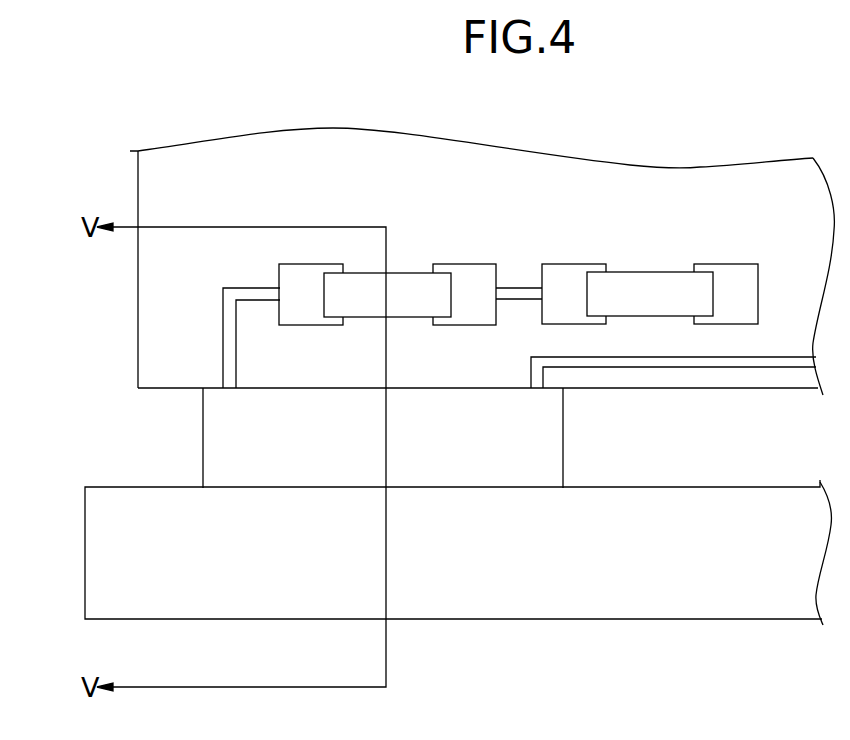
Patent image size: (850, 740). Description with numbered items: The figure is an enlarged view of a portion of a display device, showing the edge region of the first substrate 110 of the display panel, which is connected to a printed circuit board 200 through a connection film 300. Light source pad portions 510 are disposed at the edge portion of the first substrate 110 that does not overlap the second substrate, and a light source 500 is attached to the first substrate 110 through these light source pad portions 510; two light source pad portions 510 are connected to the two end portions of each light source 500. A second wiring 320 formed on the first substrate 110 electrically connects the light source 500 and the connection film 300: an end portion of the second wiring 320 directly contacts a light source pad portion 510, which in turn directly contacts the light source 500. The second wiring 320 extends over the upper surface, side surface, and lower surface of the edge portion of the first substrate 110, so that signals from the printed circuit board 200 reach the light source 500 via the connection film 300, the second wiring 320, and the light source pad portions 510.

The first substrate 110 is at (138, 341).
The printed circuit board 200 is at (140, 619).
The connection film 300 is at (203, 435).
The second wiring 320 is at (223, 355).
The light source 500 is at (410, 318).
The light source pad portion 510 is at (310, 320).